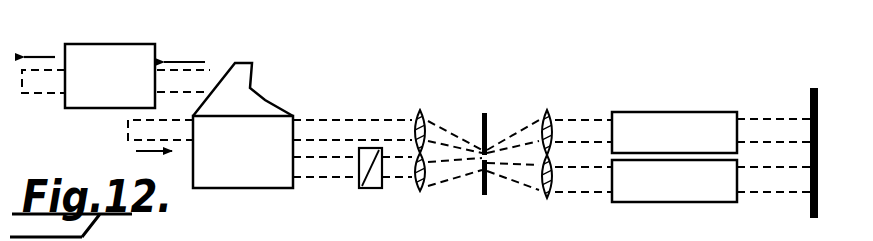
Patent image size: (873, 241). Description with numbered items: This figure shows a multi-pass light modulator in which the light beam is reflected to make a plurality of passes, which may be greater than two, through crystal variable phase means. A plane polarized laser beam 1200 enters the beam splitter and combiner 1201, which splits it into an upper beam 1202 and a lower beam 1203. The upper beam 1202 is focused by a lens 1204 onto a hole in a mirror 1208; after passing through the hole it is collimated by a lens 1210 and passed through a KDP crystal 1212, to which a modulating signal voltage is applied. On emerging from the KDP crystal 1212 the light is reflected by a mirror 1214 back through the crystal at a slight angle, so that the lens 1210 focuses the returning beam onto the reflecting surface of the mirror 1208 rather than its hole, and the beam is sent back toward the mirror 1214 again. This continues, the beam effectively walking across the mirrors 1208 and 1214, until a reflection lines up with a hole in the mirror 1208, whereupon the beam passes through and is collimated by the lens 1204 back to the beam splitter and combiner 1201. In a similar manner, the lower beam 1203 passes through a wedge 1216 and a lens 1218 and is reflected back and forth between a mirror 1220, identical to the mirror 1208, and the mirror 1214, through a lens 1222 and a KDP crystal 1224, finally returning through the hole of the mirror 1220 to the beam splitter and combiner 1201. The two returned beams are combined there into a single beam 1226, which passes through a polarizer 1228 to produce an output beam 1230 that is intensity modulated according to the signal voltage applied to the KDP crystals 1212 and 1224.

The plane polarized laser beam 1200 is at (128, 140).
The beam splitter and combiner 1201 is at (213, 189).
The upper beam 1202 is at (338, 118).
The lower beam 1203 is at (313, 180).
The lens 1204 is at (426, 110).
The mirror 1208 is at (490, 113).
The lens 1210 is at (580, 104).
The KDP crystal 1212 is at (664, 112).
The mirror 1214 is at (810, 96).
The wedge 1216 is at (372, 189).
The lens 1218 is at (420, 192).
The mirror 1220 is at (487, 193).
The lens 1222 is at (550, 200).
The KDP crystal 1224 is at (660, 203).
The single beam 1226 is at (213, 67).
The polarizer 1228 is at (88, 34).
The output beam 1230 is at (35, 94).